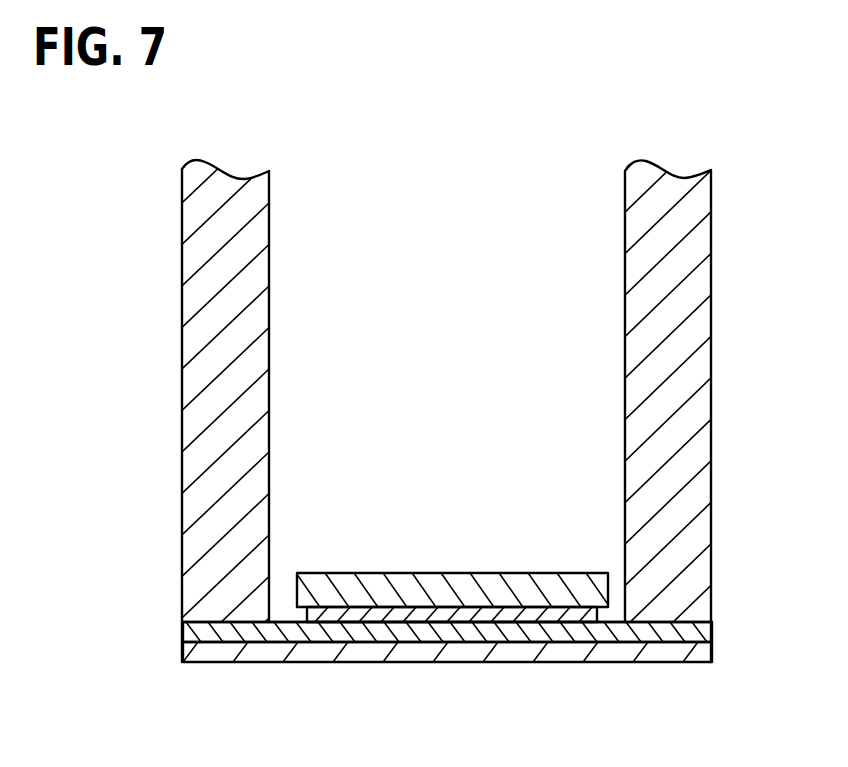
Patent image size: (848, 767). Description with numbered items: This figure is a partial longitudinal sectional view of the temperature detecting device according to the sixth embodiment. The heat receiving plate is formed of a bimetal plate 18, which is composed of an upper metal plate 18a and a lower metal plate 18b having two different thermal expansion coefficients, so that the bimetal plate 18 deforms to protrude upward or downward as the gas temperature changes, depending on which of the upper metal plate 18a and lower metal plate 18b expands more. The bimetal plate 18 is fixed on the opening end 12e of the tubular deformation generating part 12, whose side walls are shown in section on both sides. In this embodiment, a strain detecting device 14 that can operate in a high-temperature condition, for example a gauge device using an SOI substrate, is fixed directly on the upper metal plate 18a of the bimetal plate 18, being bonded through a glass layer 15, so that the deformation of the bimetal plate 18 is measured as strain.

The deformation generating part 12 is at (248, 267).
The opening end 12e is at (658, 623).
The strain detecting device 14 is at (513, 583).
The glass layer 15 is at (393, 612).
The bimetal plate 18 is at (484, 683).
The upper metal plate 18a is at (518, 635).
The lower metal plate 18b is at (372, 650).